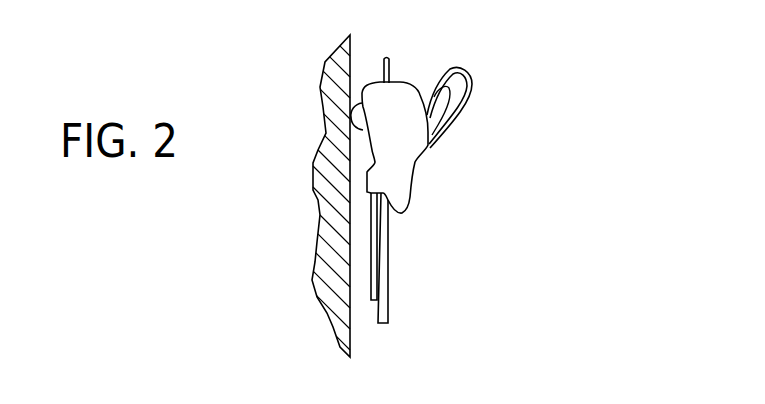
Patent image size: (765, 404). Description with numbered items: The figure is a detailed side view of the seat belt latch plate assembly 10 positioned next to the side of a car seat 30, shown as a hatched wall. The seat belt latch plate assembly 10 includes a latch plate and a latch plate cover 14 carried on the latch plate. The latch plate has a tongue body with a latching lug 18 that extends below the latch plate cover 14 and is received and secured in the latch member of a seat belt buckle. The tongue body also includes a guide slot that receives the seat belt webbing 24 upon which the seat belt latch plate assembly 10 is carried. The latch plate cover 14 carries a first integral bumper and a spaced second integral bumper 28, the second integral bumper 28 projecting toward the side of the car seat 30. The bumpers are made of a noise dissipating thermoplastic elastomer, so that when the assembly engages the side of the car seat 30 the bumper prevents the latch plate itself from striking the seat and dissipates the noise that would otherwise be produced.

The seat belt latch plate assembly 10 is at (523, 69).
The latch plate cover 14 is at (402, 110).
The latching lug 18 is at (371, 260).
The seat belt webbing 24 is at (380, 305).
The second integral bumper 28 is at (353, 118).
The side of a car seat 30 is at (330, 214).